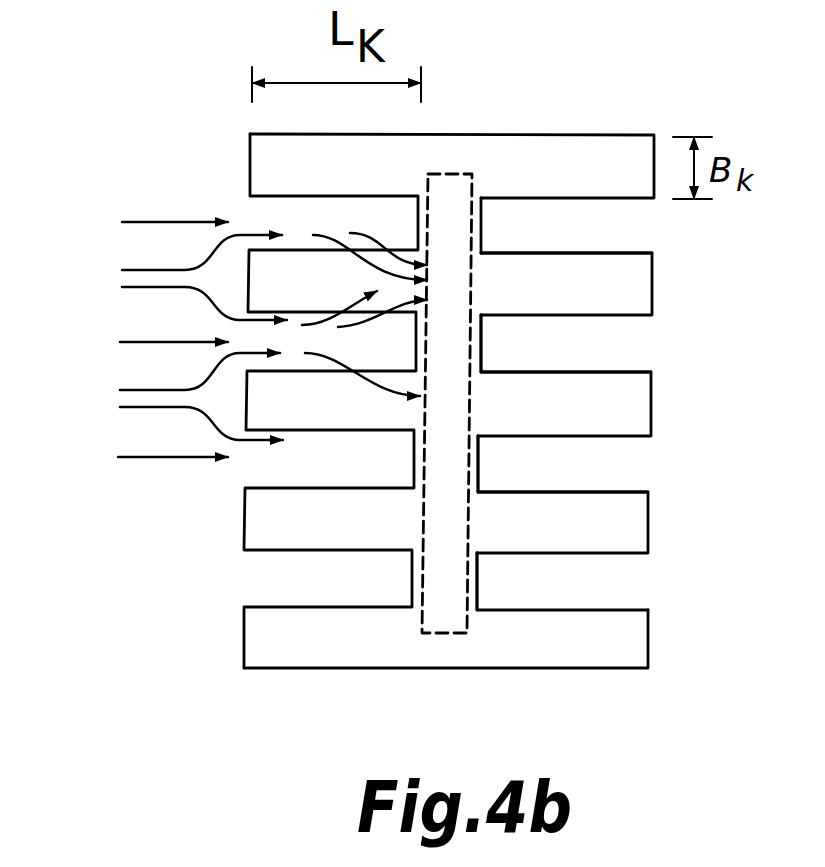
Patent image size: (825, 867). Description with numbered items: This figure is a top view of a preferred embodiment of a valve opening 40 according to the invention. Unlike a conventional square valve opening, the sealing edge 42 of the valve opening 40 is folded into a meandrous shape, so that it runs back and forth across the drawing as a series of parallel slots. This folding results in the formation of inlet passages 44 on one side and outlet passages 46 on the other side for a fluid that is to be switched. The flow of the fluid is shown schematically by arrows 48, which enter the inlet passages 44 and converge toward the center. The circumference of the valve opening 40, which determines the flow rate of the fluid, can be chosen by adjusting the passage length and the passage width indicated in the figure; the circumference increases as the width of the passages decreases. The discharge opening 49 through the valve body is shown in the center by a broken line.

The valve opening 40 is at (470, 643).
The sealing edge 42 is at (328, 665).
The inlet passages 44 is at (573, 582).
The outlet passages 46 is at (581, 647).
The arrows 48 is at (118, 467).
The discharge opening 49 is at (452, 174).